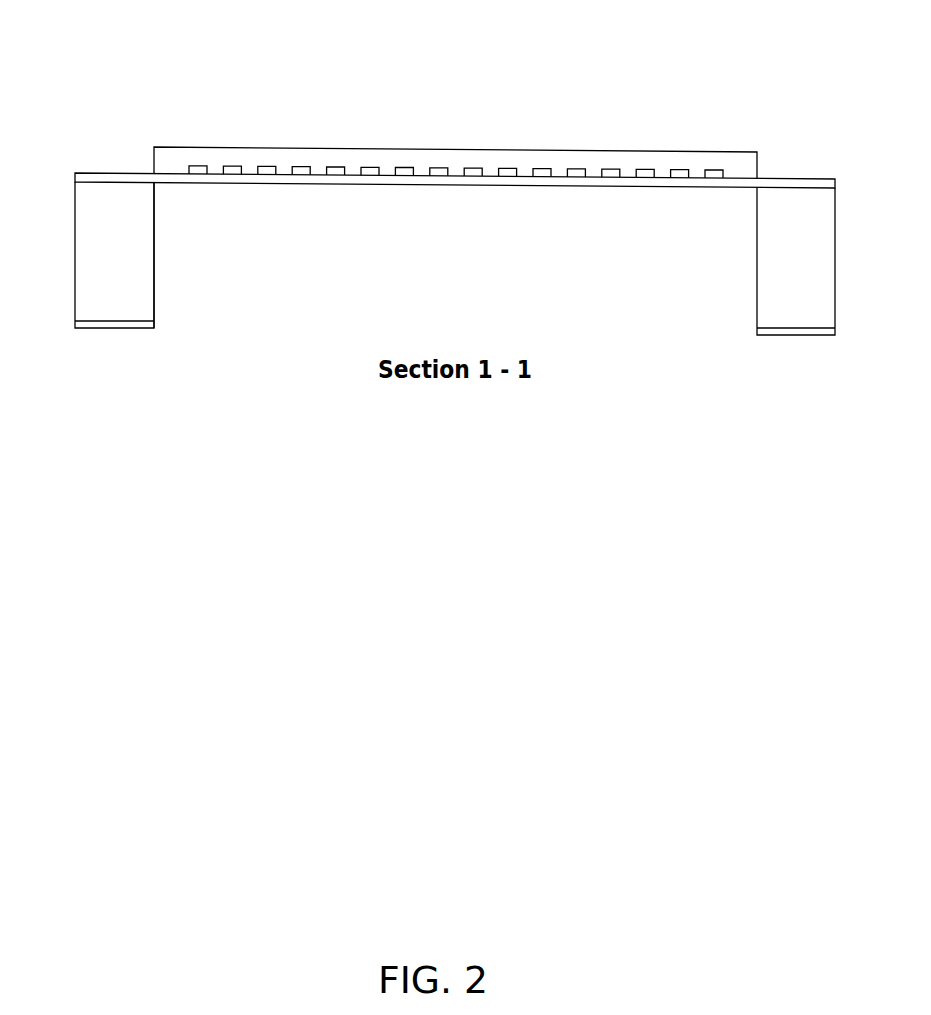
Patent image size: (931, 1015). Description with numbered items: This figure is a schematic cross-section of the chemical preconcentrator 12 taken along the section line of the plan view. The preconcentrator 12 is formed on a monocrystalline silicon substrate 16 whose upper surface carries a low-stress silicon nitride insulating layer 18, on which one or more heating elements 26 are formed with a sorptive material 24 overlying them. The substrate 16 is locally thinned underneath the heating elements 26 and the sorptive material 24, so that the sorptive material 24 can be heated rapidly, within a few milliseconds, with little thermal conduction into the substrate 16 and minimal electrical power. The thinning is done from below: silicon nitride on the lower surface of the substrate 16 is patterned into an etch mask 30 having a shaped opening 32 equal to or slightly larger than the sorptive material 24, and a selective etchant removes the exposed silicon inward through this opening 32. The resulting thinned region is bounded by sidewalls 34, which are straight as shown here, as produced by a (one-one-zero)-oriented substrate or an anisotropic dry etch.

The preconcentrator 12 is at (454, 201).
The monocrystalline silicon substrate 16 is at (127, 288).
The insulating layer 18 is at (122, 172).
The sorptive material 24 is at (170, 147).
The heating elements 26 is at (232, 166).
The etch mask 30 is at (75, 323).
The shaped opening 32 is at (202, 325).
The sidewalls 34 is at (155, 233).